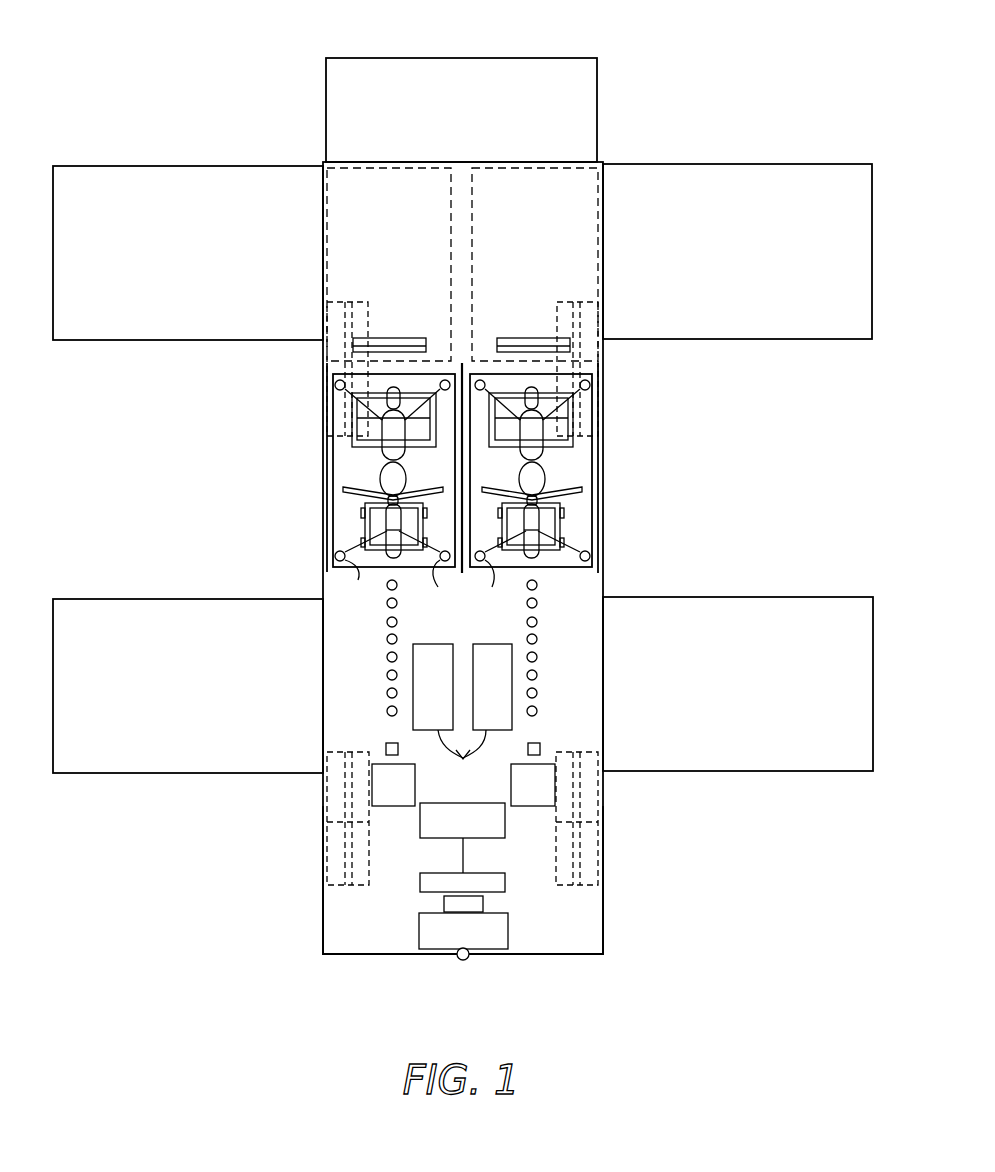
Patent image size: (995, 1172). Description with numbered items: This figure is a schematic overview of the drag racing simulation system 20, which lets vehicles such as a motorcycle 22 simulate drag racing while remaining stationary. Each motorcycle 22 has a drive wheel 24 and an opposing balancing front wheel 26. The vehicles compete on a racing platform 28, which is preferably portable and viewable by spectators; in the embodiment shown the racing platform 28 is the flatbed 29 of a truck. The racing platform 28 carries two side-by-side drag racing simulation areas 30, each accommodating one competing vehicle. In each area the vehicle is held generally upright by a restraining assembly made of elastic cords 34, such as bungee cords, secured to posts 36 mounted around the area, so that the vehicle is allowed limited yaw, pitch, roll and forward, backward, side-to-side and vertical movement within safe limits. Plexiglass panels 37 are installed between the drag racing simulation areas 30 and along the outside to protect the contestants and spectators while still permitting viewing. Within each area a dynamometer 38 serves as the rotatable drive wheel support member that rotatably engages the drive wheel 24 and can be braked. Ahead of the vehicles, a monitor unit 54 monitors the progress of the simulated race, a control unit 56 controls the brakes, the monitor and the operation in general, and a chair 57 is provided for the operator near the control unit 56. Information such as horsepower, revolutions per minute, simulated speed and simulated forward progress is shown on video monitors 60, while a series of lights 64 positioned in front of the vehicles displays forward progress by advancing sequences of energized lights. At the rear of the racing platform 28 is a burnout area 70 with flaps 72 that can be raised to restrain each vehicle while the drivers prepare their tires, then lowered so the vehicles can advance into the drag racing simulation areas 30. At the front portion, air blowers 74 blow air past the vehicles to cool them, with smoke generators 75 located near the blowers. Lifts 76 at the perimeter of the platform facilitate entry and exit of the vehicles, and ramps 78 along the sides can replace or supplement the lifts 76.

The drag racing simulation system 20 is at (730, 135).
The motorcycle 22 is at (388, 468).
The drive wheel 24 is at (372, 392).
The front wheel 26 is at (368, 543).
The racing platform 28 is at (603, 583).
The flatbed 29 is at (337, 925).
The drag racing simulation areas 30 is at (340, 508).
The elastic cords 34 is at (423, 587).
The posts 36 is at (335, 386).
The plexiglass panels 37 is at (464, 364).
The dynamometer 38 is at (343, 423).
The monitor unit 54 is at (415, 830).
The control unit 56 is at (480, 871).
The chair 57 is at (483, 903).
The video monitors 60 is at (552, 978).
The lights 64 is at (386, 639).
The burnout area 70 is at (333, 210).
The flaps 72 is at (398, 348).
The air blowers 74 is at (380, 787).
The smoke generators 75 is at (385, 748).
The lifts 76 is at (353, 57).
The ramps 78 is at (132, 166).